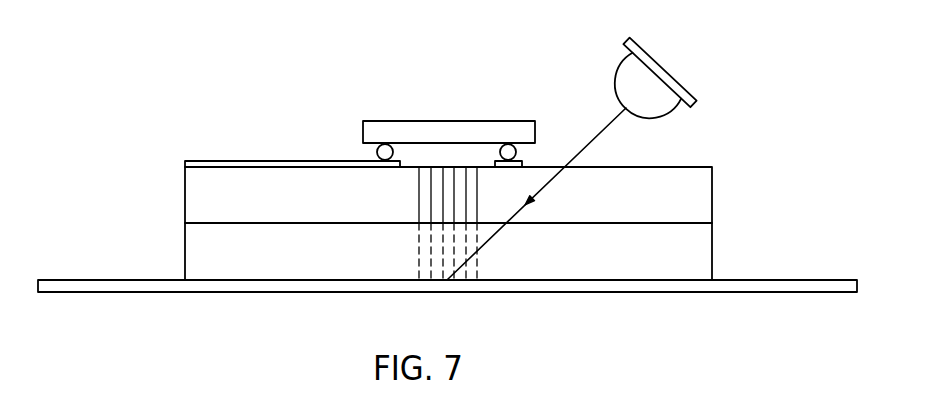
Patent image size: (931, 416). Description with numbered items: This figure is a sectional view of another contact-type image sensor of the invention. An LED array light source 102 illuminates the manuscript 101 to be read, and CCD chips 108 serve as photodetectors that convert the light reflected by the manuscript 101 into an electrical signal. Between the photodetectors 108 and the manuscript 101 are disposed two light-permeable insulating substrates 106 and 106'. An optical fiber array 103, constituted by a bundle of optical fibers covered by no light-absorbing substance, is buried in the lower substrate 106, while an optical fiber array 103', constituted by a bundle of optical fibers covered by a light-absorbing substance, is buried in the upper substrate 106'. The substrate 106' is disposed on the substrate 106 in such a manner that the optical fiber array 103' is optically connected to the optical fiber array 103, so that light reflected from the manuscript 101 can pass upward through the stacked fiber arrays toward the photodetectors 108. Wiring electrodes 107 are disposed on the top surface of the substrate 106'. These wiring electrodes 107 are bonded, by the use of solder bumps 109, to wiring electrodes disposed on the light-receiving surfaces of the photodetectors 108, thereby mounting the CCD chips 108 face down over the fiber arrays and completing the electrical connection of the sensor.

The manuscript 101 is at (623, 292).
The LED array light source 102 is at (620, 67).
The optical fiber array 103 is at (438, 280).
The optical fiber array 103' is at (416, 195).
The light-permeable insulating substrate 106 is at (476, 251).
The light-permeable insulating substrate 106' is at (480, 195).
The wiring electrodes 107 is at (260, 161).
The CCD chips 108 is at (445, 131).
The solder bumps 109 is at (378, 157).